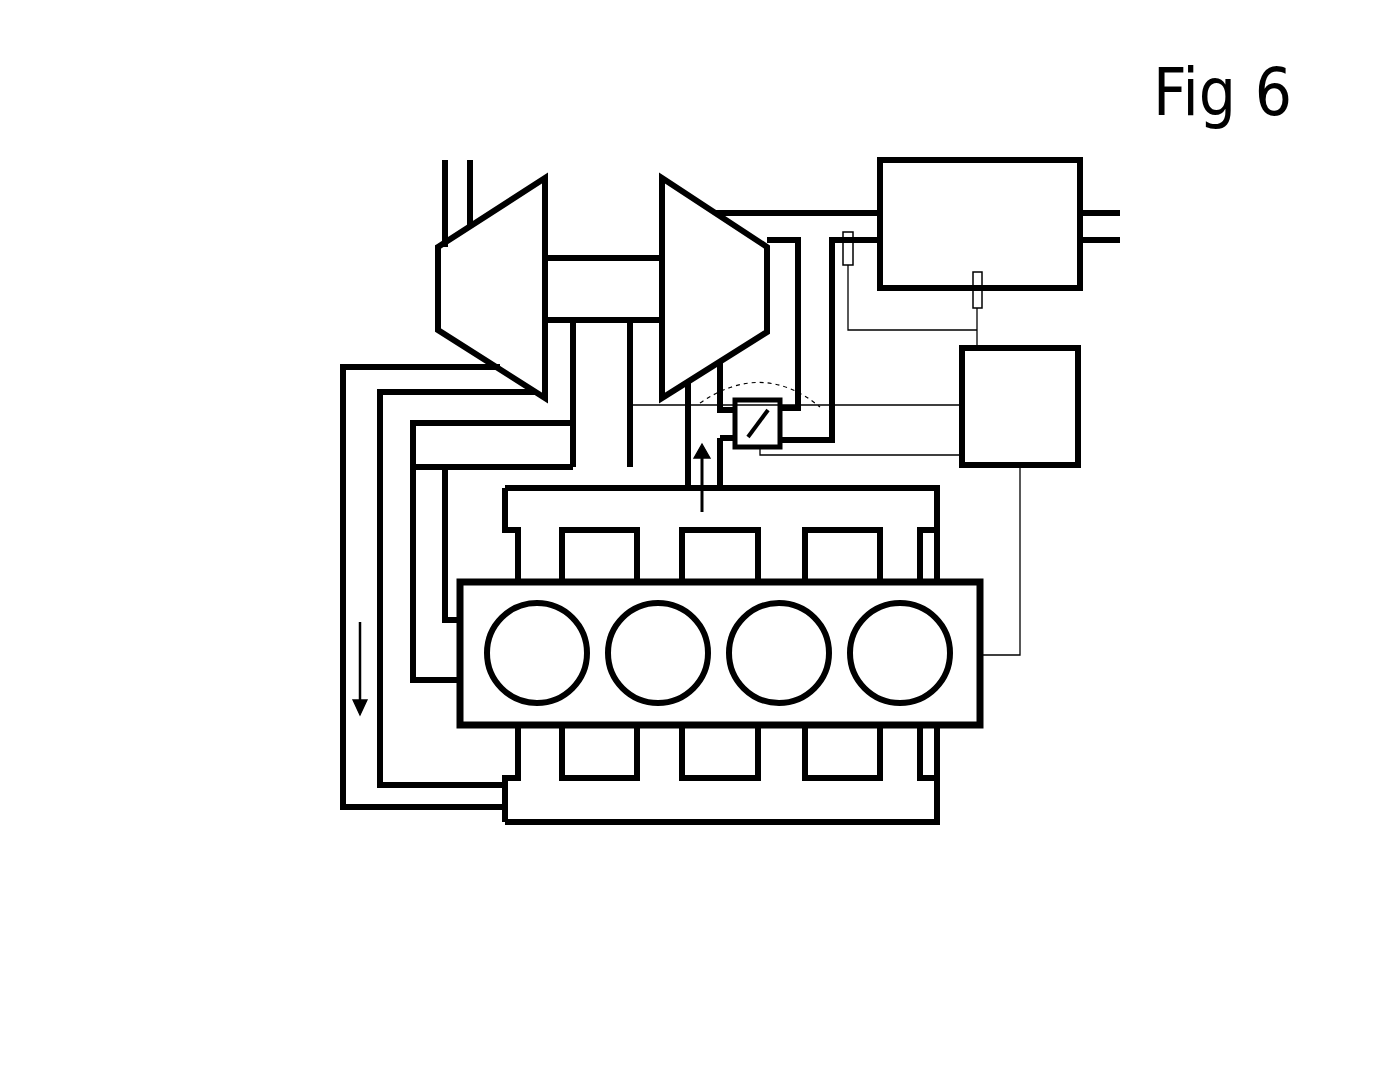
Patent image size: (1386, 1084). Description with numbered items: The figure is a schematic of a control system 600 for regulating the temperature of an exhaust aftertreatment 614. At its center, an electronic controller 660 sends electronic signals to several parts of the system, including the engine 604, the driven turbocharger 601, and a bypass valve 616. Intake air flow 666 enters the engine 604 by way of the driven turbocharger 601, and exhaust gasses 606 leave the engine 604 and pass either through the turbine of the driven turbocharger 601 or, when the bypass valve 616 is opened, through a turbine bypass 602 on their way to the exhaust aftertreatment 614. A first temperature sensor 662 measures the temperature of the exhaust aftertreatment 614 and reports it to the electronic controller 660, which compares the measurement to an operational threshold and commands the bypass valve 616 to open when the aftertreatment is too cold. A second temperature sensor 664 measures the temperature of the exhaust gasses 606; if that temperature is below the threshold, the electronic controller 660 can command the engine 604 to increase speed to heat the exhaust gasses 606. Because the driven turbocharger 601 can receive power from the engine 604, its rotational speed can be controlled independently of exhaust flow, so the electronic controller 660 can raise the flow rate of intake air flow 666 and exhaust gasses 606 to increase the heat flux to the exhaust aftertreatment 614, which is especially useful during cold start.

The control system 600 is at (326, 150).
The driven turbocharger 601 is at (603, 292).
The turbine bypass 602 is at (815, 296).
The engine 604 is at (698, 713).
The exhaust gasses 606 is at (698, 452).
The exhaust aftertreatment 614 is at (963, 210).
The bypass valve 616 is at (750, 422).
The electronic controller 660 is at (1060, 423).
The first temperature sensor 662 is at (982, 298).
The second temperature sensor 664 is at (850, 270).
The intake air flow 666 is at (343, 699).